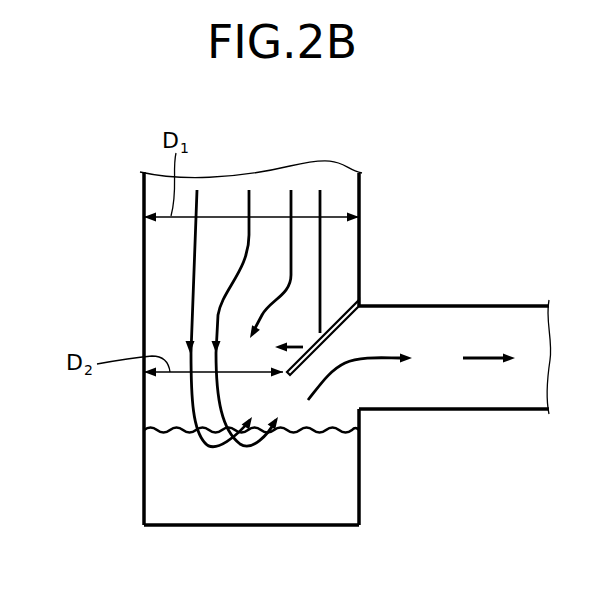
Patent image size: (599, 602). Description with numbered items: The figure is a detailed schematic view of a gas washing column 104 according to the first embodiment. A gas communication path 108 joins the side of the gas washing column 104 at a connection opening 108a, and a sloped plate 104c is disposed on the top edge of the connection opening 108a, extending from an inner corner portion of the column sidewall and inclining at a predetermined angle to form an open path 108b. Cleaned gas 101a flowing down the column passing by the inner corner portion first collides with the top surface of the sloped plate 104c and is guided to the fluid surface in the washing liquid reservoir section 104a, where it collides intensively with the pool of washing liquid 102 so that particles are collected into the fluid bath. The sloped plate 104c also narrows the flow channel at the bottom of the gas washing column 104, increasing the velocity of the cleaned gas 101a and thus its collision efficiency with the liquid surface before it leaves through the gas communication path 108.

The gas washing column 104 is at (116, 262).
The washing liquid reservoir section 104a is at (148, 477).
The sloped plate 104c is at (352, 308).
The gas communication path 108 is at (478, 305).
The connection opening 108a is at (361, 306).
The open path 108b is at (352, 388).
The cleaned gas 101a is at (490, 362).
The washing liquid 102 is at (278, 501).